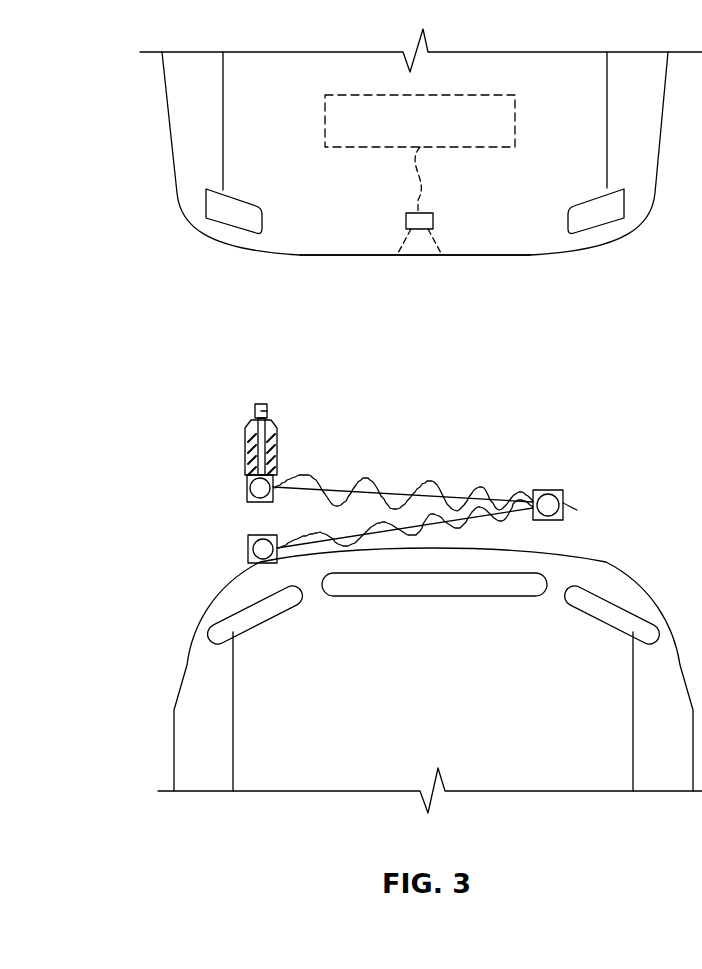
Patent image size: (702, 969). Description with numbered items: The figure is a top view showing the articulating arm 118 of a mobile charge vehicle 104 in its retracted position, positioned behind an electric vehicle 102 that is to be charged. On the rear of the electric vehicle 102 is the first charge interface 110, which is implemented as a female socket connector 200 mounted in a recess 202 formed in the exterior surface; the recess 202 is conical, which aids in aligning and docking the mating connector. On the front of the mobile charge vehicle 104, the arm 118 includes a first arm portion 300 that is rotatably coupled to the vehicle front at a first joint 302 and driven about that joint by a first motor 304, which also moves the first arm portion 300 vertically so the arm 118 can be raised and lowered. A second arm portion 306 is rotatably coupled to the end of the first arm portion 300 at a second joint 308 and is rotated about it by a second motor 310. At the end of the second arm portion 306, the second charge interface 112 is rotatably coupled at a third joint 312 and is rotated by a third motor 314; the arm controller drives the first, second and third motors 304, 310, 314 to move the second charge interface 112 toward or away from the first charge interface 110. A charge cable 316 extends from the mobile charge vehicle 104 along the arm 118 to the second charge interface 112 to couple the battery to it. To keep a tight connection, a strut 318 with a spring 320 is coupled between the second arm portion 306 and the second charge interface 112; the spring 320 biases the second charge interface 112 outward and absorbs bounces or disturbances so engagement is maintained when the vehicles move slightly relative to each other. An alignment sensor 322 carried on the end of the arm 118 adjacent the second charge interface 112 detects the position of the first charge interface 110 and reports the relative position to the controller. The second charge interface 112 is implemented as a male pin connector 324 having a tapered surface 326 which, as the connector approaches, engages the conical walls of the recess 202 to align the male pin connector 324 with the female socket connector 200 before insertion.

The electric vehicle 102 is at (180, 135).
The female socket connector 200 is at (433, 221).
The recess 202 is at (432, 242).
The first charge interface 110 is at (395, 259).
The second charge interface 112 is at (258, 432).
The male pin connector 324 is at (267, 410).
The tapered surface 326 is at (248, 422).
The alignment sensor 322 is at (274, 427).
The strut 318 is at (247, 436).
The spring 320 is at (250, 457).
The third joint 312 is at (250, 484).
The third motor 314 is at (257, 490).
The charge cable 316 is at (432, 477).
The second arm portion 306 is at (457, 494).
The articulating arm 118 is at (502, 497).
The first arm portion 300 is at (221, 561).
The first joint 302 is at (263, 549).
The first motor 304 is at (248, 563).
The second motor 310 is at (565, 494).
The second joint 308 is at (550, 505).
The mobile charge vehicle 104 is at (198, 673).